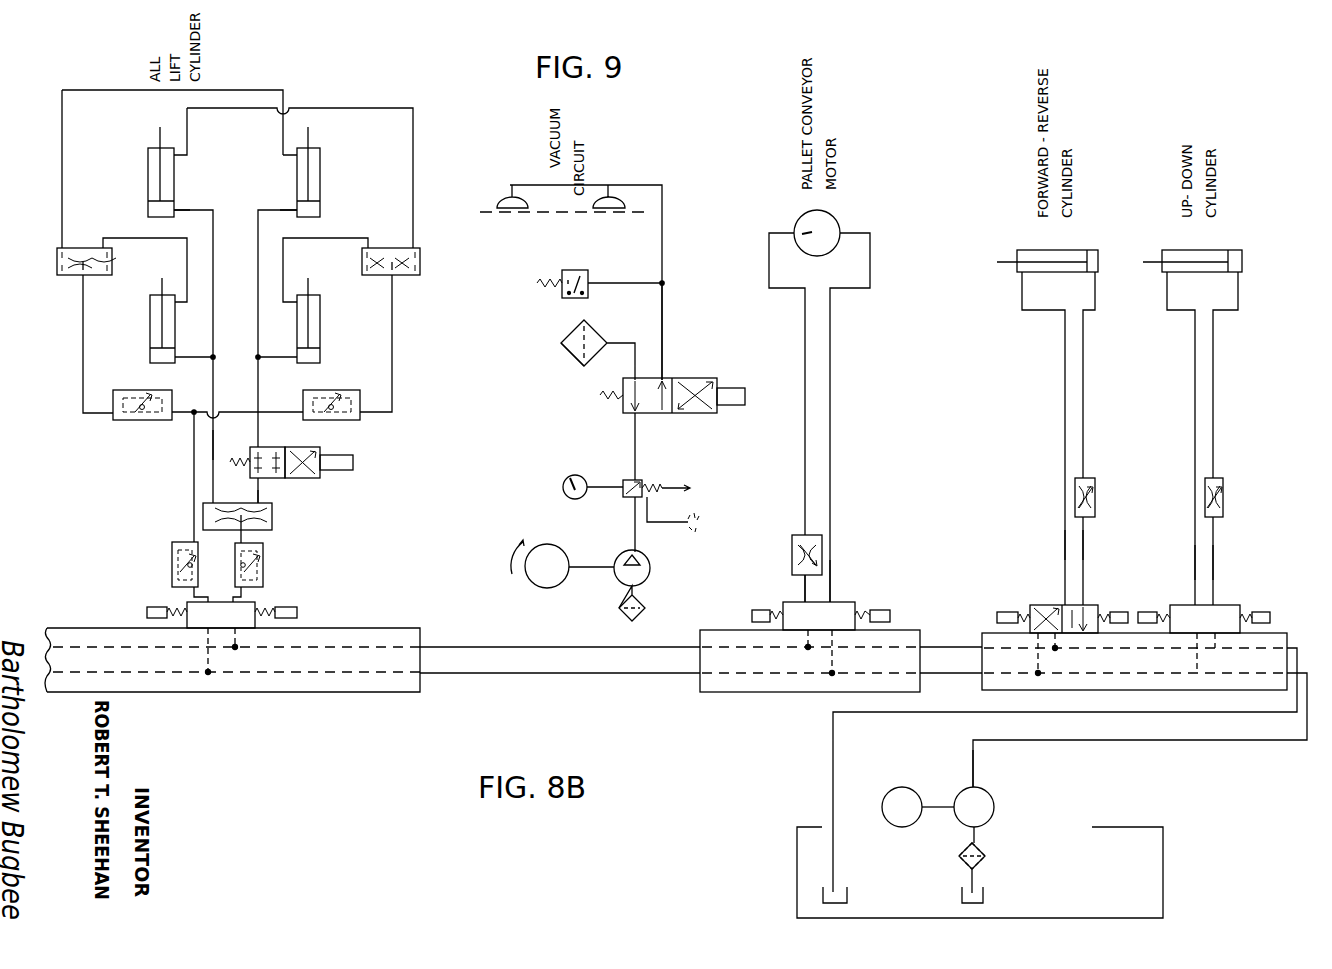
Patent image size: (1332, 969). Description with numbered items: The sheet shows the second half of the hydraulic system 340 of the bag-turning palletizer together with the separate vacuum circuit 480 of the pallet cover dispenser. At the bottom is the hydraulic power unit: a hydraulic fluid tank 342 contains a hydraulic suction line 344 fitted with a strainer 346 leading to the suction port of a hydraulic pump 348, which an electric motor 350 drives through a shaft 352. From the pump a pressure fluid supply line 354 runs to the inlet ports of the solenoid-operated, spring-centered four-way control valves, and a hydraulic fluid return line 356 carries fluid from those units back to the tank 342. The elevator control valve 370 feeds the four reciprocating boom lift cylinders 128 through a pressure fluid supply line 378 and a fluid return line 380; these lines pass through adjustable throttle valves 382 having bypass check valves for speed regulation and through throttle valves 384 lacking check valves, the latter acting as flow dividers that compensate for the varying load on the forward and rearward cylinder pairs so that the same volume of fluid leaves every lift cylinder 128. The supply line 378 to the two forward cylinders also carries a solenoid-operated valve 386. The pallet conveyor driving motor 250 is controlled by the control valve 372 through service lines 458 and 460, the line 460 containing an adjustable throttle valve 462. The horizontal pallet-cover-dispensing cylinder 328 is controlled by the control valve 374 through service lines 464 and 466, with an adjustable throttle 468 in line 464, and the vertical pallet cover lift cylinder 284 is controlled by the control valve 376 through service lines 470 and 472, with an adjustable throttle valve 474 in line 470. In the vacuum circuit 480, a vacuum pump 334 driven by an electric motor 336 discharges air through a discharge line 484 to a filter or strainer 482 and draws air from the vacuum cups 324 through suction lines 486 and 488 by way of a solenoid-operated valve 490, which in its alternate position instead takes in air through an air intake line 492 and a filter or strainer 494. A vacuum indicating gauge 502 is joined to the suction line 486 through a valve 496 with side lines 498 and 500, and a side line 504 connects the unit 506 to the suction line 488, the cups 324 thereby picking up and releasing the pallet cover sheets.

In FIG. 8B, the boom lift cylinder 128 is at (148, 185).
In FIG. 8B, the pressure fluid supply line 378 is at (181, 210).
In FIG. 8B, the fluid return line 380 is at (62, 208).
In FIG. 8B, the adjustable throttle valve 382 is at (132, 430).
In FIG. 8B, the throttle valve 384 is at (64, 275).
In FIG. 8B, the solenoid-operated valve 386 is at (288, 447).
In FIG. 8B, the elevator control valve 370 is at (222, 615).
In FIG. 8B, the hydraulic system 340 is at (68, 626).
In FIG. 8B, the pallet conveyor driving motor 250 is at (832, 218).
In FIG. 8B, the adjustable throttle valve 462 is at (792, 534).
In FIG. 8B, the service line 460 is at (802, 586).
In FIG. 8B, the service line 458 is at (830, 582).
In FIG. 8B, the control valve 372 is at (810, 647).
In FIG. 8B, the pallet-cover-dispensing cylinder 328 is at (1056, 250).
In FIG. 8B, the pallet cover lift cylinder 284 is at (1196, 250).
In FIG. 8B, the adjustable throttle 468 is at (1096, 490).
In FIG. 8B, the adjustable throttle valve 474 is at (1224, 490).
In FIG. 8B, the service line 466 is at (1065, 541).
In FIG. 8B, the service line 464 is at (1083, 541).
In FIG. 8B, the service line 472 is at (1195, 560).
In FIG. 8B, the service line 470 is at (1213, 562).
In FIG. 8B, the control valve 374 is at (1091, 608).
In FIG. 8B, the control valve 376 is at (1204, 619).
In FIG. 8B, the hydraulic fluid return line 356 is at (1313, 633).
In FIG. 8B, the hydraulic pump 348 is at (994, 797).
In FIG. 8B, the electric motor 350 is at (899, 785).
In FIG. 8B, the shaft 352 is at (938, 806).
In FIG. 8B, the pressure fluid supply line 354 is at (974, 756).
In FIG. 8B, the hydraulic suction line 344 is at (976, 833).
In FIG. 8B, the strainer 346 is at (985, 866).
In FIG. 8B, the hydraulic fluid tank 342 is at (797, 843).
In FIG. 9, the vacuum circuit 480 is at (669, 184).
In FIG. 9, the vacuum cup 324 is at (497, 202).
In FIG. 9, the suction line 488 is at (686, 330).
In FIG. 9, the vacuum switch 506 is at (573, 261).
In FIG. 9, the side line 504 is at (608, 283).
In FIG. 9, the air intake line 492 is at (616, 343).
In FIG. 9, the filter or strainer 494 is at (566, 353).
In FIG. 9, the solenoid-operated valve 490 is at (690, 378).
In FIG. 9, the suction line 486 is at (635, 435).
In FIG. 9, the valve 496 is at (646, 478).
In FIG. 9, the side line 498 is at (604, 487).
In FIG. 9, the vacuum indicating gauge 502 is at (563, 485).
In FIG. 9, the side line 500 is at (680, 528).
In FIG. 9, the vacuum pump 334 is at (650, 570).
In FIG. 9, the electric motor 336 is at (530, 584).
In FIG. 9, the discharge line 484 is at (645, 597).
In FIG. 9, the filter or strainer 482 is at (598, 609).